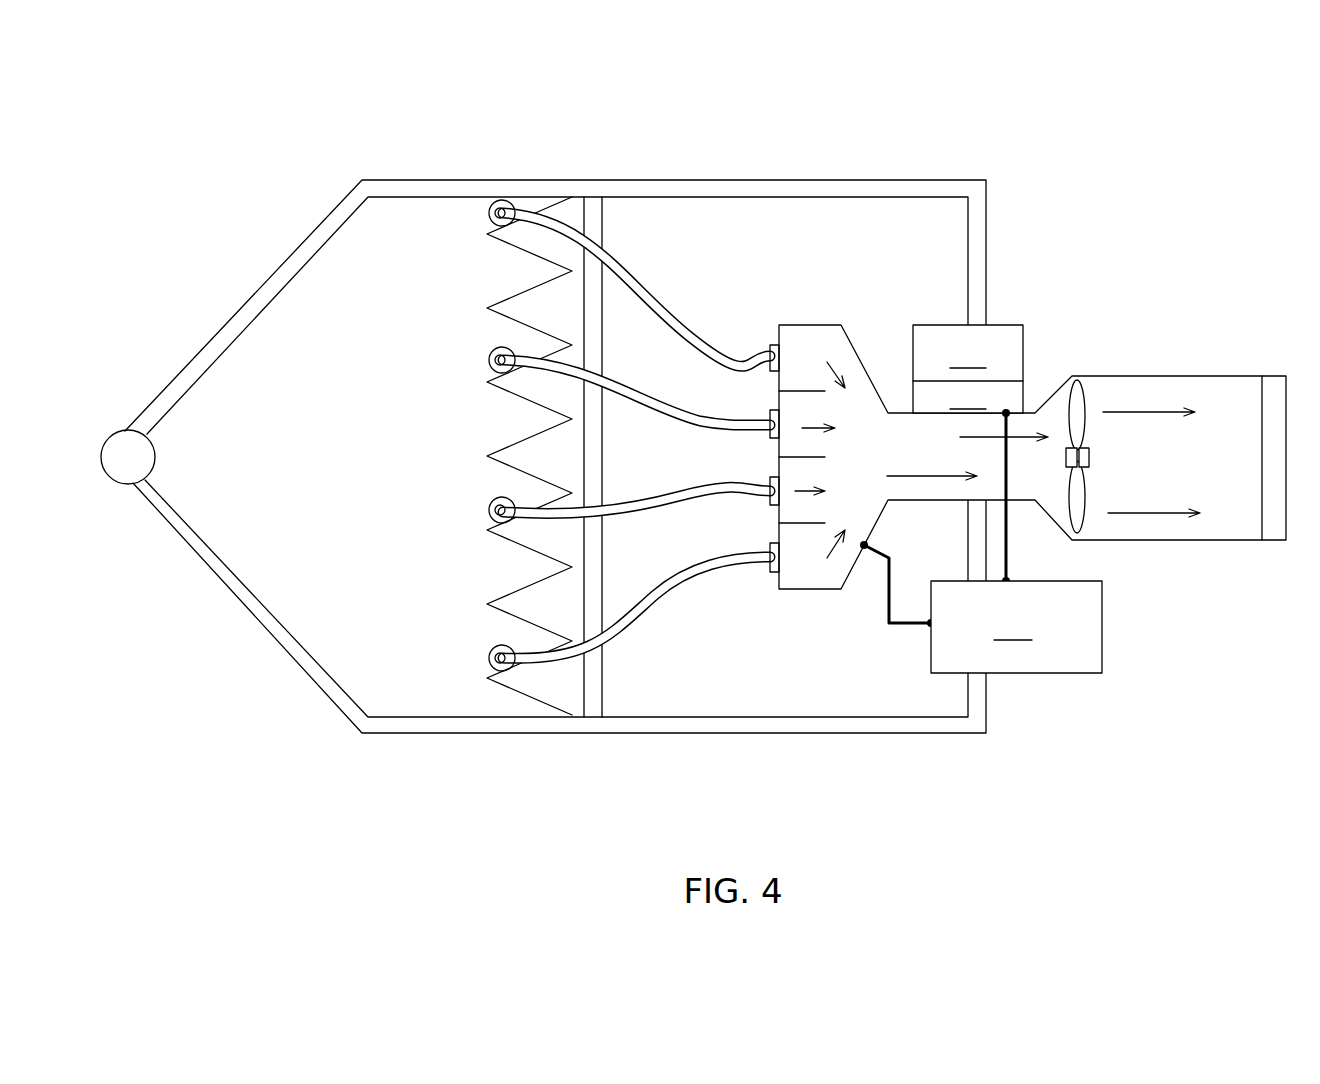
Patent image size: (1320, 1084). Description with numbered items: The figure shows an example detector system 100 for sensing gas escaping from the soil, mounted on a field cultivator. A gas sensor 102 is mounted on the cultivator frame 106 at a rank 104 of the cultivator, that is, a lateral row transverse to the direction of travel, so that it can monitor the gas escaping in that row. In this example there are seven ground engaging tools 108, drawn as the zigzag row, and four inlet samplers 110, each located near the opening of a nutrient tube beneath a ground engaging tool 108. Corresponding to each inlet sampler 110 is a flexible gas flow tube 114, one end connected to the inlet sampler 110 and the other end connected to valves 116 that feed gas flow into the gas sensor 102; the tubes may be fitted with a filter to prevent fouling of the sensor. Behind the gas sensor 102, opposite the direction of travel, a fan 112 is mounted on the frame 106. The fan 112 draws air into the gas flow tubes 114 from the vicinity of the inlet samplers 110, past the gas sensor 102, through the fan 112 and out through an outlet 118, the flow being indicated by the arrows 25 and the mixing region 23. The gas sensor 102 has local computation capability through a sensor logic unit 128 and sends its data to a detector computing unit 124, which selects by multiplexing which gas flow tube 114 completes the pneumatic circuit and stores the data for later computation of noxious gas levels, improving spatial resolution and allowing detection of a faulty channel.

The detector system 100 is at (1104, 152).
The mixing chamber 23 is at (820, 305).
The airflow 25 is at (1160, 447).
The gas sensor 102 is at (968, 369).
The rank 104 is at (596, 208).
The cultivator frame 106 is at (917, 728).
The ground engaging tool 108 is at (558, 688).
The inlet sampler 110 is at (490, 655).
The fan 112 is at (1078, 403).
The gas flow tube 114 is at (628, 265).
The valves 116 is at (810, 562).
The outlet 118 is at (1273, 390).
The detector computing unit 124 is at (981, 541).
The sensor logic unit 128 is at (968, 395).